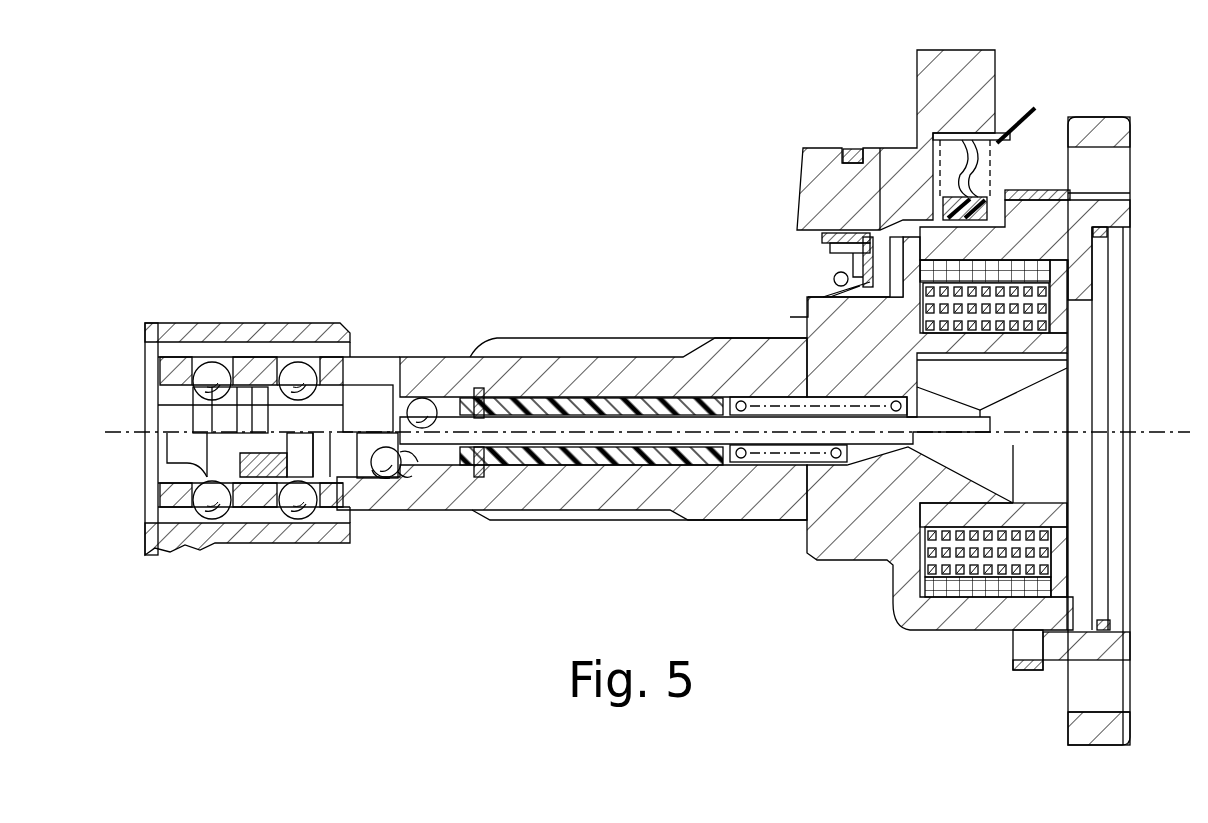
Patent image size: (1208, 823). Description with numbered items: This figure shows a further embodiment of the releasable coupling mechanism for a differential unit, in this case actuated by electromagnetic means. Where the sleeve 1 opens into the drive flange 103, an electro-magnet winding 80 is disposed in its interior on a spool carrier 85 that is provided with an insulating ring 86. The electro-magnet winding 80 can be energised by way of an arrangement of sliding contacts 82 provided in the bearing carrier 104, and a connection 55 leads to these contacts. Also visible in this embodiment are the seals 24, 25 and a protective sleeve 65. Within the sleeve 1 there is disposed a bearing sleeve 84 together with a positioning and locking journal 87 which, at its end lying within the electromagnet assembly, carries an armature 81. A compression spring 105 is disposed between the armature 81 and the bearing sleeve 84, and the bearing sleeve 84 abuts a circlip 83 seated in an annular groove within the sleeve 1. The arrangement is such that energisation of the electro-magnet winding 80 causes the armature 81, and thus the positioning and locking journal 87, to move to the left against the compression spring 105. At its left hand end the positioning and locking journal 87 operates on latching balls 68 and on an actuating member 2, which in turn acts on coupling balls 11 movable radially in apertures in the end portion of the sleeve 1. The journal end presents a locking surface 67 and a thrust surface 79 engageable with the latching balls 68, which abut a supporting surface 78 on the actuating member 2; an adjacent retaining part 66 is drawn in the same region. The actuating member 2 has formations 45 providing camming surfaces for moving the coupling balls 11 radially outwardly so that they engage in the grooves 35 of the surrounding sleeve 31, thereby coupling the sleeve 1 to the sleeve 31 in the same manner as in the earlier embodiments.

The sleeve 1 is at (500, 366).
The actuating member 2 is at (370, 387).
The balls 11 is at (300, 368).
The seal 24 is at (853, 150).
The seal 25 is at (878, 232).
The sleeve 31 is at (222, 333).
The grooves 35 is at (263, 348).
The formations 45 is at (332, 387).
The connecting pin 55 is at (1030, 118).
The protective sleeve 65 is at (1053, 200).
The retaining ring 66 is at (407, 472).
The locking surface 67 is at (420, 466).
The latching balls 68 is at (397, 478).
The supporting surface 78 is at (370, 458).
The thrust surface 79 is at (405, 438).
The electro-magnet winding 80 is at (1048, 316).
The armature 81 is at (1037, 368).
The sliding contacts 82 is at (977, 190).
The circlip 83 is at (476, 393).
The bearing sleeve 84 is at (540, 407).
The spool carrier 85 is at (1057, 533).
The insulating ring 86 is at (957, 503).
The positioning and locking journal 87 is at (577, 427).
The drive flange 103 is at (1103, 208).
The bearing carrier 104 is at (820, 188).
The compression spring 105 is at (768, 400).